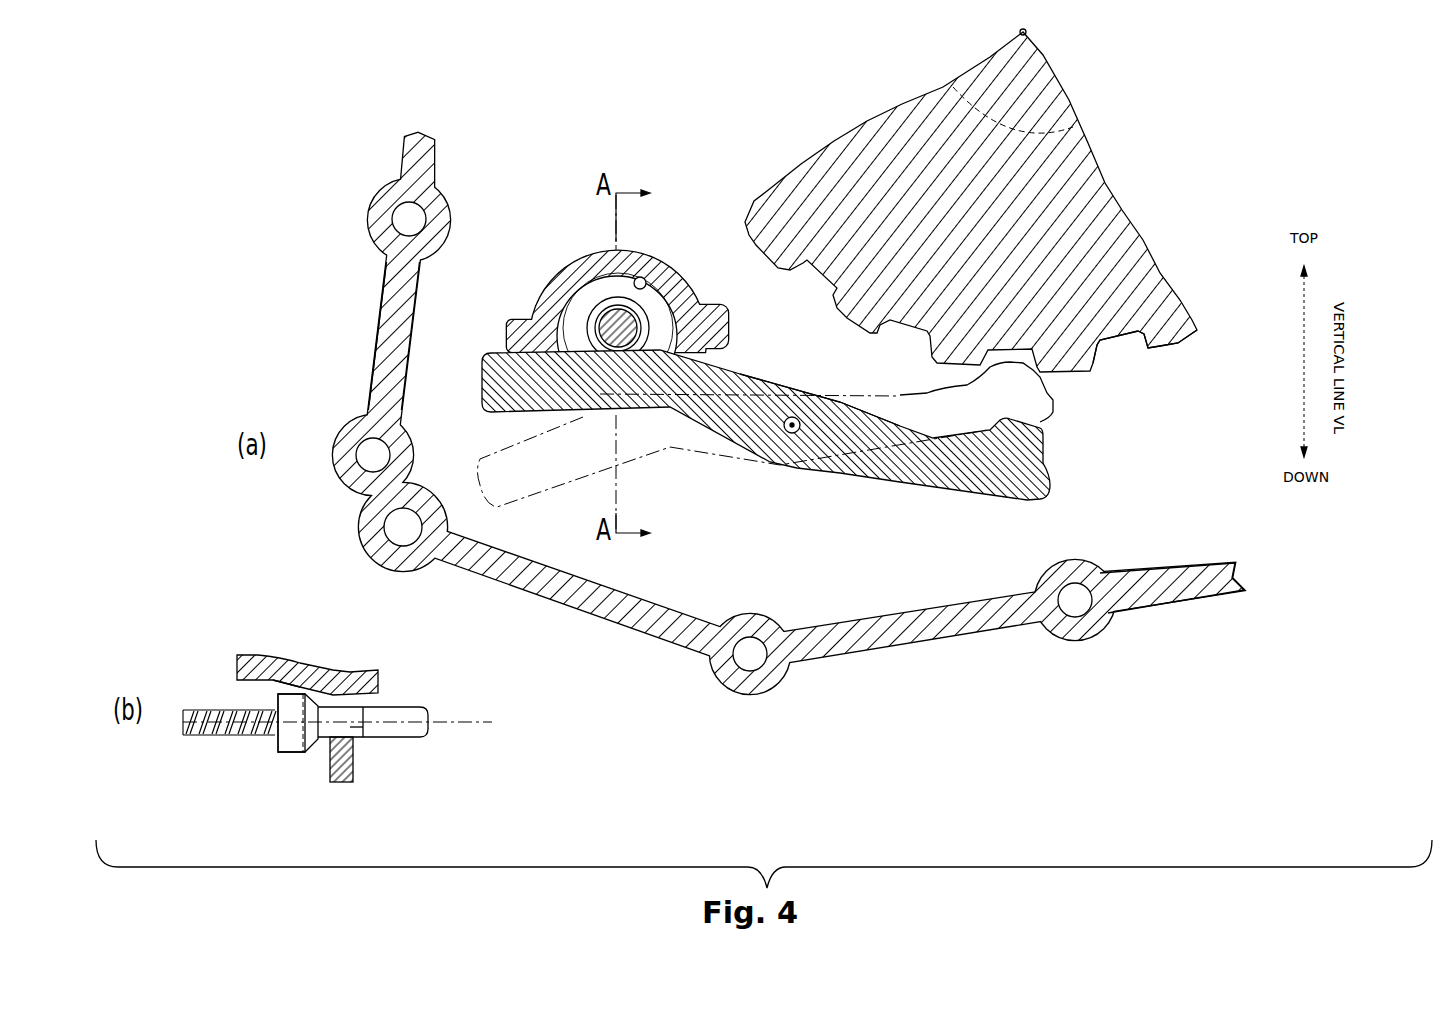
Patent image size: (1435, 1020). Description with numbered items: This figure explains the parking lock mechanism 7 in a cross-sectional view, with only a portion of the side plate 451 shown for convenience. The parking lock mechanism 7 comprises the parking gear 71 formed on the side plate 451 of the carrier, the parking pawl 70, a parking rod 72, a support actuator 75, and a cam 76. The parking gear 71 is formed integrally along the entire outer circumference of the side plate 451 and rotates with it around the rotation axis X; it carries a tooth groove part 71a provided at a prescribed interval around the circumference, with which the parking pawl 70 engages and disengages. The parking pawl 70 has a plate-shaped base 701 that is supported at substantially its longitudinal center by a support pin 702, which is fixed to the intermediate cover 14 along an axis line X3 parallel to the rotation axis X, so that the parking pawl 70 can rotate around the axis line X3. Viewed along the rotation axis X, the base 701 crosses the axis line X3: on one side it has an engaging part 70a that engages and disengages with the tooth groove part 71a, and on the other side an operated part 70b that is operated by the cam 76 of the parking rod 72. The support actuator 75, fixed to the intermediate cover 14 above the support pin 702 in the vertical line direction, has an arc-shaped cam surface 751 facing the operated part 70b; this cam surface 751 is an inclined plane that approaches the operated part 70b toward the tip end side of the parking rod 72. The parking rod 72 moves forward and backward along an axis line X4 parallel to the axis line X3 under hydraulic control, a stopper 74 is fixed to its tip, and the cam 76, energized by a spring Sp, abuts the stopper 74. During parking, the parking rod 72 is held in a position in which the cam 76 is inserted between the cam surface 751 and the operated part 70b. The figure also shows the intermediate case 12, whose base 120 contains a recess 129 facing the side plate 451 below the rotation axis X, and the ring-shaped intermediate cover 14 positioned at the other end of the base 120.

The parking lock mechanism 7 is at (642, 162).
The intermediate case 12 is at (373, 399).
The intermediate cover 14 is at (743, 413).
The base 120 is at (385, 320).
The recess 129 is at (1180, 572).
The side plate 451 is at (1073, 170).
The parking pawl 70 is at (719, 604).
The engaging part 70a is at (1050, 410).
The operated part 70b is at (662, 322).
The base 701 is at (870, 478).
The support pin 702 is at (795, 435).
The parking gear 71 is at (1184, 344).
The tooth groove part 71a is at (1110, 340).
The parking rod 72 is at (607, 318).
The stopper 74 is at (410, 740).
The support actuator 75 is at (543, 280).
The cam surface 751 is at (638, 285).
The cam 76 is at (503, 336).
The rotation axis X is at (1028, 33).
The axis line X3 is at (792, 418).
The axis line X4 is at (620, 338).
The spring Sp is at (205, 712).